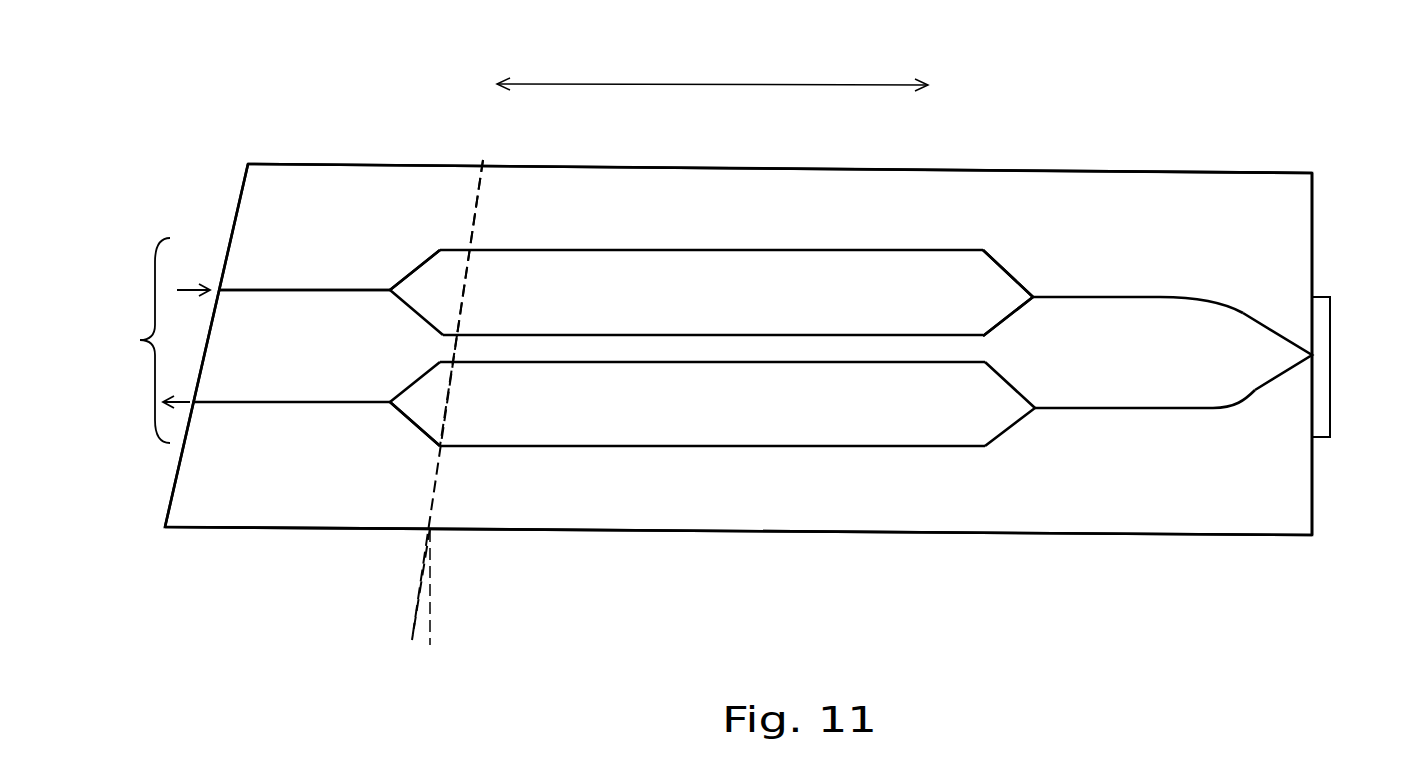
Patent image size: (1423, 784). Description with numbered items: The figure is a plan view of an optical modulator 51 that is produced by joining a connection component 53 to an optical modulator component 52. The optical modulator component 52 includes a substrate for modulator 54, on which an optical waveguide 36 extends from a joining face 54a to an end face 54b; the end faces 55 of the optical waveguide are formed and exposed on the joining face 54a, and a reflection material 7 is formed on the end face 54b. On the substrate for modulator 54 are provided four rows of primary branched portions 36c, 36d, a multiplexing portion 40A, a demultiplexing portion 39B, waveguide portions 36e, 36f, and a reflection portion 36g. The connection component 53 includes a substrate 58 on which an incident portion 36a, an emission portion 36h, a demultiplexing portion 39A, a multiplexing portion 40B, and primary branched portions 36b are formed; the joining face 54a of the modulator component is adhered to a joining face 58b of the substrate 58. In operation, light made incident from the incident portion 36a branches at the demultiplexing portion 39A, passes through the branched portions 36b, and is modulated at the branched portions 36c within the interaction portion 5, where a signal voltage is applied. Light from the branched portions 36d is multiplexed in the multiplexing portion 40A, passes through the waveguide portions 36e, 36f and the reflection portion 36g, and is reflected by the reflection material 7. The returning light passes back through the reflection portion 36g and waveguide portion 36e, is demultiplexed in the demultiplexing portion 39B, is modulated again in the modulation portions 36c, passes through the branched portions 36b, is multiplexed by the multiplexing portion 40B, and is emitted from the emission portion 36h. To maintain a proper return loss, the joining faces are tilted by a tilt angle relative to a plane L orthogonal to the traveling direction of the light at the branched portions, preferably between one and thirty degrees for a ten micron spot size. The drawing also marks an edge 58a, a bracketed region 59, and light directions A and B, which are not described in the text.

The interaction portion 5 is at (845, 85).
The reflection material 7 is at (1322, 437).
The optical waveguide 36 is at (367, 285).
The incident portion 36a is at (297, 293).
The primary branched portions 36b is at (416, 268).
The primary branched portions 36c is at (733, 335).
The primary branched portions 36d is at (1005, 268).
The waveguide portion 36e is at (1150, 295).
The waveguide portion 36f is at (1225, 300).
The reflection portion 36g is at (1265, 323).
The emission portion 36h is at (303, 407).
The demultiplexing portion 39A is at (390, 285).
The demultiplexing portion 39B is at (1037, 407).
The multiplexing portion 40A is at (1037, 293).
The multiplexing portion 40B is at (390, 400).
The optical modulator 51 is at (1292, 166).
The optical modulator component 52 is at (964, 166).
The connection component 53 is at (356, 160).
The substrate for modulator 54 is at (766, 168).
The joining face 54a is at (467, 165).
The end face 54b is at (1314, 212).
The end faces of the optical waveguide 55 is at (448, 336).
The substrate 58 is at (240, 497).
The inclined end face 58a is at (238, 205).
The joining face 58b is at (480, 224).
The input/output ports 59 is at (131, 340).
The input light A is at (190, 282).
The output light B is at (182, 398).
The plane L is at (433, 607).